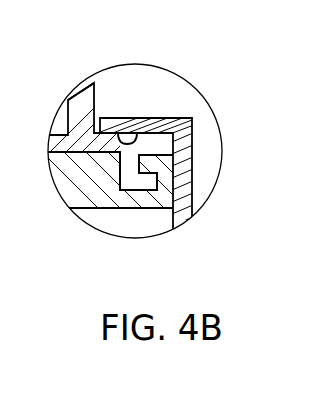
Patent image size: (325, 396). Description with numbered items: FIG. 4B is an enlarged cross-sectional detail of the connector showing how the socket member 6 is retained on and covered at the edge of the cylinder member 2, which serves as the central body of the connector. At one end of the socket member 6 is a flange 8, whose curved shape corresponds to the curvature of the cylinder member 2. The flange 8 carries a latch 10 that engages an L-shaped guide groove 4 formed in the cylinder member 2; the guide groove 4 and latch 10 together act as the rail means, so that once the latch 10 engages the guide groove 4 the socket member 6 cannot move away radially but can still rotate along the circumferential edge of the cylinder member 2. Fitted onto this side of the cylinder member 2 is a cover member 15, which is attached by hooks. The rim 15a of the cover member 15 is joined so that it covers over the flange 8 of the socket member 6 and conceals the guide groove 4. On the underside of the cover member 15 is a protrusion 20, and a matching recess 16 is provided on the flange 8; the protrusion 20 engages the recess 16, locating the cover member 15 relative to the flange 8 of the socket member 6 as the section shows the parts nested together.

The cylinder member 2 is at (117, 218).
The L-shaped guide groove 4 is at (146, 182).
The socket member 6 is at (66, 89).
The flange 8 is at (138, 135).
The latch 10 is at (127, 178).
The cover member 15 is at (202, 180).
The rim 15a is at (150, 124).
The recess 16 is at (122, 122).
The protrusion 20 is at (190, 124).